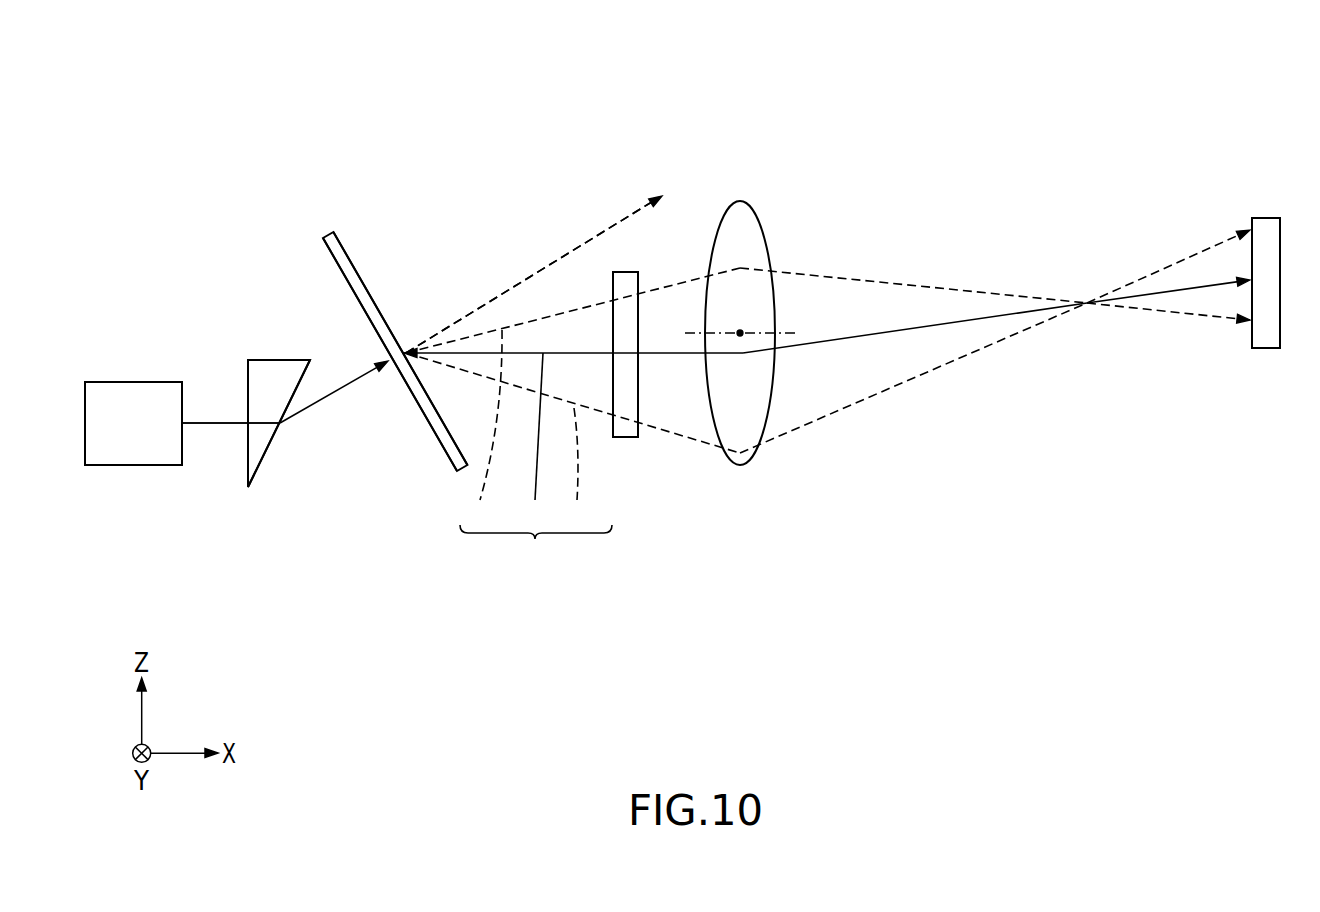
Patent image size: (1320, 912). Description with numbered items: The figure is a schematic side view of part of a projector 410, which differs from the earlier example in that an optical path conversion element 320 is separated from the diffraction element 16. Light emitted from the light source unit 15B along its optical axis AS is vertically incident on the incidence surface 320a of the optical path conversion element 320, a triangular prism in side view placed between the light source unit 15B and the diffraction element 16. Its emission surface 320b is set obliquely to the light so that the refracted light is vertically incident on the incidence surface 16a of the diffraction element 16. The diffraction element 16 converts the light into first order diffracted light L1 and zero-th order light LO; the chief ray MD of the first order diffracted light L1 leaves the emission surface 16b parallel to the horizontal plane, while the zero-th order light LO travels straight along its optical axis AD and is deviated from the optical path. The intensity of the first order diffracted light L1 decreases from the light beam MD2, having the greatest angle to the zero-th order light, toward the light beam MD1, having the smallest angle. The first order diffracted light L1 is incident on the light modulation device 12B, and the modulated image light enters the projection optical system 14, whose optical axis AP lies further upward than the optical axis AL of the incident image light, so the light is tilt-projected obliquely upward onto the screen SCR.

The projector 410 is at (469, 105).
The light source unit 15B is at (128, 458).
The optical axis of the light source unit AS is at (203, 425).
The optical path conversion element 320 is at (270, 370).
The emission surface 320b is at (302, 380).
The incidence surface 320a is at (248, 468).
The diffraction element 16 is at (332, 240).
The emission surface 16b is at (355, 267).
The incidence surface 16a is at (423, 418).
The optical axis of the 0-th order light AD is at (547, 266).
The 0-th order light LO is at (623, 220).
The optical axis of the incident image light AL is at (683, 355).
The light beam MD1 is at (486, 431).
The chief ray of the first order diffracted light MD is at (532, 443).
The light beam MD2 is at (582, 470).
The first order diffracted light L1 is at (536, 549).
The light modulation device 12B is at (625, 277).
The projection optical system 14 is at (747, 223).
The optical axis of the projection optical system AP is at (783, 333).
The screen SCR is at (1267, 225).